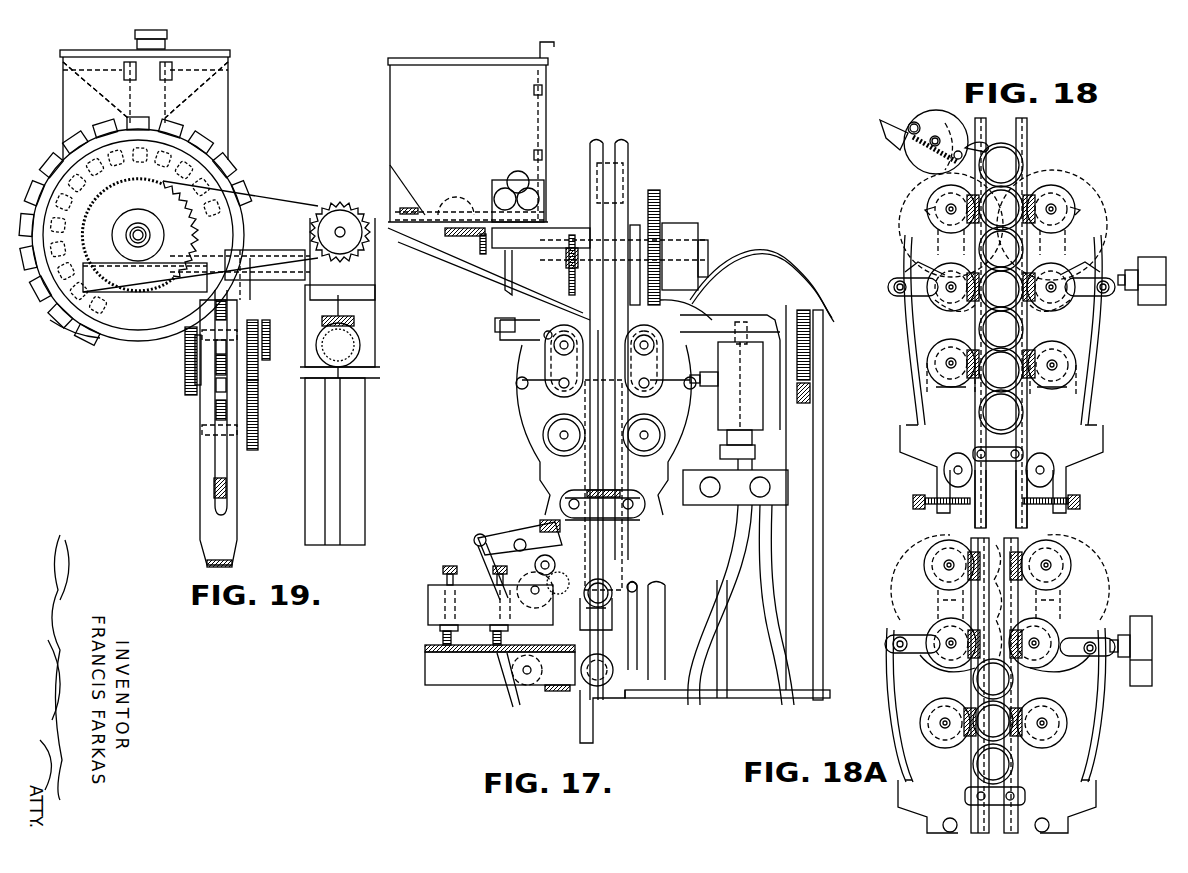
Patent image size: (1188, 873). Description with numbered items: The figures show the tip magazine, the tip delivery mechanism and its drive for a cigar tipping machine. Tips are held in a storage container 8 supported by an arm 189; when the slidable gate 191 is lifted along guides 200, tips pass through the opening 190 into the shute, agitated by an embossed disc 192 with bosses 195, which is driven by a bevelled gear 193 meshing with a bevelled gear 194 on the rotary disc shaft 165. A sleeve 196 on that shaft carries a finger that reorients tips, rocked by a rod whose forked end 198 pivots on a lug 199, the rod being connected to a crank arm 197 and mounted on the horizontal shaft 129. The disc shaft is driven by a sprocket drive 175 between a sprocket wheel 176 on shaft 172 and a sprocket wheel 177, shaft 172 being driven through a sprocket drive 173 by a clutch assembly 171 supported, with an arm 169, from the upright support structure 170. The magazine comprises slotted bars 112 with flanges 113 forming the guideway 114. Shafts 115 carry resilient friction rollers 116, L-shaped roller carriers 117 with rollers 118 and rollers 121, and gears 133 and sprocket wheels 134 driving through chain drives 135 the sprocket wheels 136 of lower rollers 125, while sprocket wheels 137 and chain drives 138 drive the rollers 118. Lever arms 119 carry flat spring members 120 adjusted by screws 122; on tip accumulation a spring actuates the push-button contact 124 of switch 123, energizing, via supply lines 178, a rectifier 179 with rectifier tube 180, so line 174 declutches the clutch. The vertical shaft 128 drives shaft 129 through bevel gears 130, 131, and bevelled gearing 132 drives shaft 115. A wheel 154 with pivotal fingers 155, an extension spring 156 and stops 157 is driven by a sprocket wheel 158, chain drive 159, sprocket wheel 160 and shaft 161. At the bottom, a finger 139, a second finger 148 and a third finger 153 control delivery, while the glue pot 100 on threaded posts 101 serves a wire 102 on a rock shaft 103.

In FIG. 19, the storage container 8 is at (145, 105).
In FIG. 17, the storage container 8 is at (468, 140).
In FIG. 17, the glue pot 100 is at (430, 598).
In FIG. 17, the threaded posts 101 is at (440, 642).
In FIG. 17, the wire 102 is at (492, 538).
In FIG. 17, the rock shaft 103 is at (578, 608).
In FIG. 19, the slotted longitudinal bars 112 is at (232, 510).
In FIG. 17, the slotted longitudinal bars 112 is at (665, 462).
In FIG. 17, the flanges 113 is at (616, 475).
In FIG. 18, the flanges 113 is at (1027, 520).
In FIG. 17, the vertical channel or guideway 114 is at (600, 412).
In FIG. 18, the vertical channel or guideway 114 is at (1018, 190).
In FIG. 18A, the vertical channel or guideway 114 is at (1008, 745).
In FIG. 17, the shaft 115 is at (552, 350).
In FIG. 18, the shaft 115 is at (948, 209).
In FIG. 18A, the shaft 115 is at (947, 566).
In FIG. 19, the resilient friction rollers 116 is at (218, 350).
In FIG. 18, the resilient friction rollers 116 is at (1073, 216).
In FIG. 18A, the resilient friction rollers 116 is at (1066, 580).
In FIG. 18, the L-shaped roller carriers 117 is at (1095, 272).
In FIG. 18A, the L-shaped roller carriers 117 is at (1070, 660).
In FIG. 19, the resilient friction rollers 118 is at (218, 385).
In FIG. 18, the resilient friction rollers 118 is at (1060, 318).
In FIG. 18A, the resilient friction rollers 118 is at (1050, 672).
In FIG. 18, the lever arms 119 is at (1075, 458).
In FIG. 18A, the lever arms 119 is at (997, 806).
In FIG. 18, the flat spring members 120 is at (1095, 397).
In FIG. 18A, the flat spring members 120 is at (1097, 746).
In FIG. 18, the rollers 121 is at (1108, 280).
In FIG. 18A, the rollers 121 is at (1096, 640).
In FIG. 18, the adjusting screws 122 is at (1082, 505).
In FIG. 18, the switch 123 is at (1152, 305).
In FIG. 18A, the switch 123 is at (1132, 662).
In FIG. 18, the push-button contact 124 is at (1150, 258).
In FIG. 18A, the push-button contact 124 is at (1135, 618).
In FIG. 19, the resilient friction rollers 125 is at (215, 455).
In FIG. 18, the resilient friction rollers 125 is at (1056, 392).
In FIG. 18A, the resilient friction rollers 125 is at (1048, 750).
In FIG. 17, the vertical shaft 128 is at (823, 556).
In FIG. 17, the horizontal shaft 129 is at (700, 348).
In FIG. 17, the bevel gear 130 is at (820, 312).
In FIG. 17, the bevel gear 131 is at (800, 312).
In FIG. 19, the bevelled gearing 132 is at (310, 372).
In FIG. 18, the gear 133 is at (905, 188).
In FIG. 19, the sprocket wheel 134 is at (250, 320).
In FIG. 18, the sprocket wheel 134 is at (925, 214).
In FIG. 18, the chain drive 135 is at (928, 302).
In FIG. 19, the sprocket wheels 136 is at (258, 440).
In FIG. 18, the sprocket wheels 136 is at (1082, 408).
In FIG. 19, the sprocket wheels 137 is at (188, 340).
In FIG. 19, the chain drives 138 is at (195, 365).
In FIG. 18, the chain drives 138 is at (1062, 265).
In FIG. 18A, the chain drives 138 is at (1056, 622).
In FIG. 19, the finger 139 is at (232, 565).
In FIG. 17, the second finger 148 is at (545, 540).
In FIG. 17, the third finger 153 is at (578, 545).
In FIG. 18, the wheel 154 is at (912, 160).
In FIG. 18, the pivotal fingers 155 is at (885, 134).
In FIG. 18, the extension spring 156 is at (908, 150).
In FIG. 18, the stops 157 is at (908, 126).
In FIG. 19, the sprocket wheel 158 is at (272, 345).
In FIG. 19, the chain drive 159 is at (298, 300).
In FIG. 19, the sprocket wheel 160 is at (300, 250).
In FIG. 19, the shaft 161 is at (258, 300).
In FIG. 18, the shaft 161 is at (935, 138).
In FIG. 19, the horizontal shaft 165 is at (62, 322).
In FIG. 17, the horizontal shaft 165 is at (608, 245).
In FIG. 19, the arm 169 is at (190, 277).
In FIG. 19, the upright support structure 170 is at (365, 395).
In FIG. 19, the clutch assembly 171 is at (342, 228).
In FIG. 17, the clutch assembly 171 is at (680, 232).
In FIG. 19, the horizontal shaft 172 is at (347, 235).
In FIG. 19, the sprocket drive 173 is at (380, 290).
In FIG. 17, the line 174 is at (786, 262).
In FIG. 19, the sprocket drive 175 is at (320, 205).
In FIG. 19, the sprocket wheel 176 is at (382, 248).
In FIG. 19, the sprocket wheel 177 is at (135, 231).
In FIG. 17, the sprocket wheel 177 is at (662, 203).
In FIG. 17, the supply lines 178 is at (706, 640).
In FIG. 17, the rectifier 179 is at (768, 425).
In FIG. 17, the rectifier tube 180 is at (714, 366).
In FIG. 17, the arm 189 is at (478, 268).
In FIG. 17, the opening 190 is at (542, 190).
In FIG. 19, the slidable gate 191 is at (167, 38).
In FIG. 17, the slidable gate 191 is at (538, 55).
In FIG. 17, the disc 192 is at (425, 222).
In FIG. 17, the bevelled gear 193 is at (458, 233).
In FIG. 17, the bevelled gear 194 is at (483, 255).
In FIG. 17, the bosses 195 is at (412, 210).
In FIG. 17, the sleeve 196 is at (552, 250).
In FIG. 17, the crank arm 197 is at (545, 340).
In FIG. 17, the forked end 198 is at (566, 260).
In FIG. 17, the lug 199 is at (498, 247).
In FIG. 19, the guides 200 is at (230, 64).